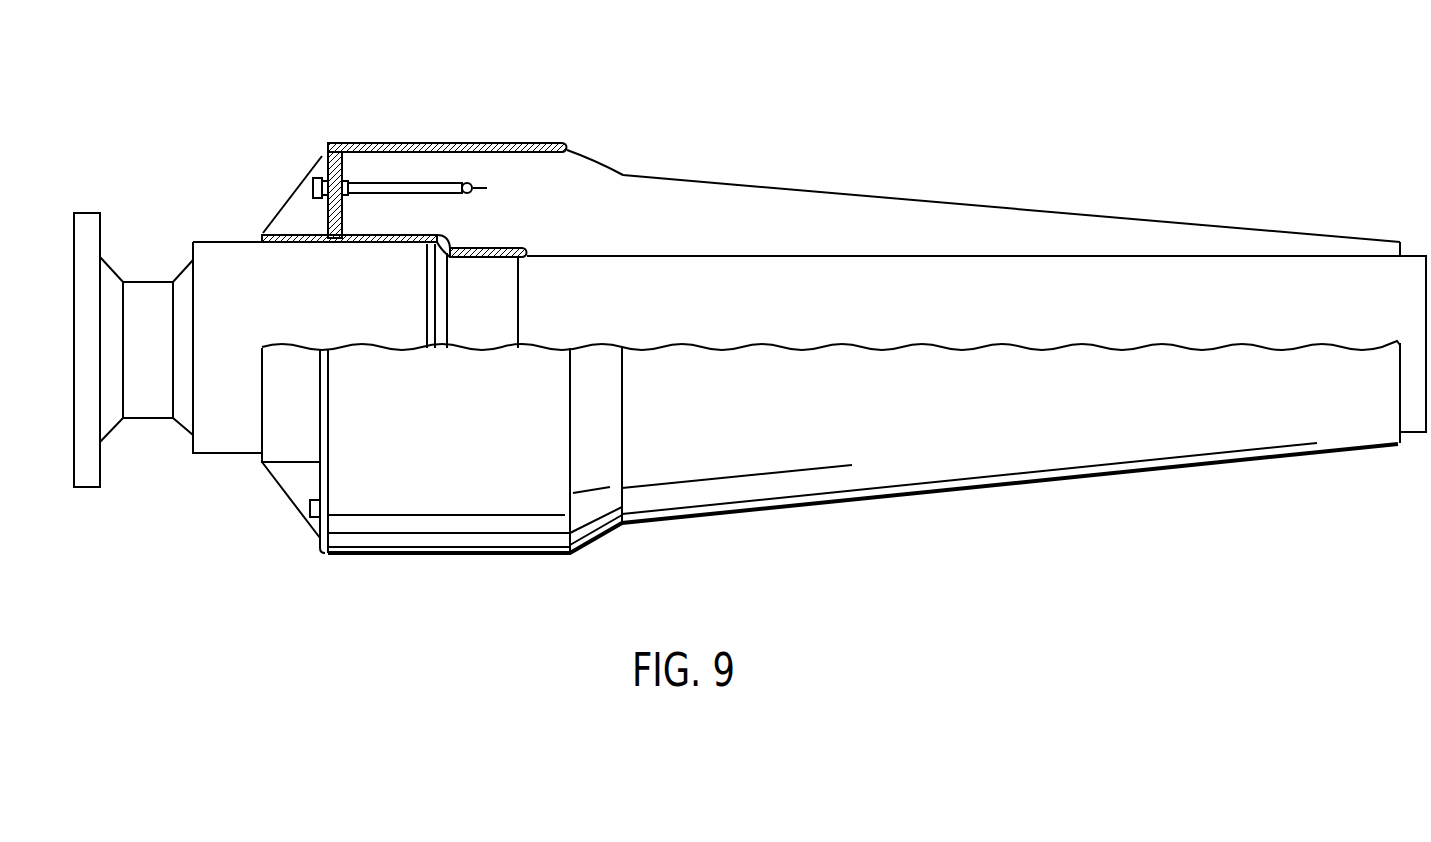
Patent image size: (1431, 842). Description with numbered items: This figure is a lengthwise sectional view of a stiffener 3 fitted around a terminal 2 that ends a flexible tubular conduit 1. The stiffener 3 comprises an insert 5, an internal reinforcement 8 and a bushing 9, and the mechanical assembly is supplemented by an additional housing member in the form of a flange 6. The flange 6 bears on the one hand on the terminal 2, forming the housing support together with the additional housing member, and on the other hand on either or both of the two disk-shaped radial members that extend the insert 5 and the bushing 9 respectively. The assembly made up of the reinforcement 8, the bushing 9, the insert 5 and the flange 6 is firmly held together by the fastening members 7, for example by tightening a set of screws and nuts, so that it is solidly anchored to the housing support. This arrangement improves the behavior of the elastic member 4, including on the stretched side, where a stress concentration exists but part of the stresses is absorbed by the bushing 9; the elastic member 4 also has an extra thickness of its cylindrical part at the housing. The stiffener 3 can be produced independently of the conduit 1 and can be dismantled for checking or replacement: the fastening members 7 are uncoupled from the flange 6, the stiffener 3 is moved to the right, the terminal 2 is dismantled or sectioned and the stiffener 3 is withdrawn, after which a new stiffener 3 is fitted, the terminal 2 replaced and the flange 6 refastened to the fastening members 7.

The flexible tubular conduit 1 is at (1415, 273).
The terminal 2 is at (221, 234).
The stiffener 3 is at (924, 116).
The elastic member 4 is at (733, 183).
The insert 5 is at (508, 251).
The flange 6 is at (263, 235).
The fastening members 7 is at (312, 188).
The internal reinforcement 8 is at (427, 175).
The bushing 9 is at (528, 143).